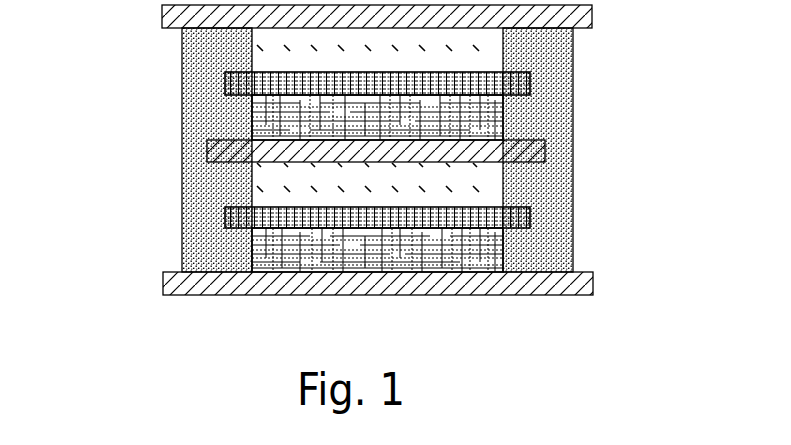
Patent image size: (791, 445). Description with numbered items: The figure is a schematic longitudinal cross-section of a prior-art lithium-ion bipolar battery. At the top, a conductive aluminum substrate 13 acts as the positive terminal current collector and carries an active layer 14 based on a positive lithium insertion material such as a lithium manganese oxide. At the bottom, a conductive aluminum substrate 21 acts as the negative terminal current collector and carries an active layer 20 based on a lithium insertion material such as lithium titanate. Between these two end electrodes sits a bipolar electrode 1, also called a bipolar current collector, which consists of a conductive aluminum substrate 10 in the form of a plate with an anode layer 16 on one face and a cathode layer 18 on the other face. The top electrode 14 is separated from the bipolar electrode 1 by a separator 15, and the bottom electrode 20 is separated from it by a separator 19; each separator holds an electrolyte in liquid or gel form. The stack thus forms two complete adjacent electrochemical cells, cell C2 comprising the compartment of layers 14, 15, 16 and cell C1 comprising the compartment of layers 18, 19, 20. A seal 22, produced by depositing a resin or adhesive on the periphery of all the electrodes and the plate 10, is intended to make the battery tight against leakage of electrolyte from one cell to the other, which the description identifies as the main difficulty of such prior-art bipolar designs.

The bipolar electrode 1 is at (46, 114).
The conductive aluminum substrate 10 is at (545, 148).
The conductive aluminum substrate 13 is at (162, 12).
The active layer 14 is at (262, 43).
The separator 15 is at (225, 82).
The anode layer 16 is at (255, 117).
The cathode layer 18 is at (258, 178).
The separator 19 is at (227, 213).
The active layer 20 is at (253, 250).
The conductive aluminum substrate 21 is at (163, 283).
The seal 22 is at (560, 180).
The cell C1 is at (543, 165).
The cell C2 is at (543, 30).